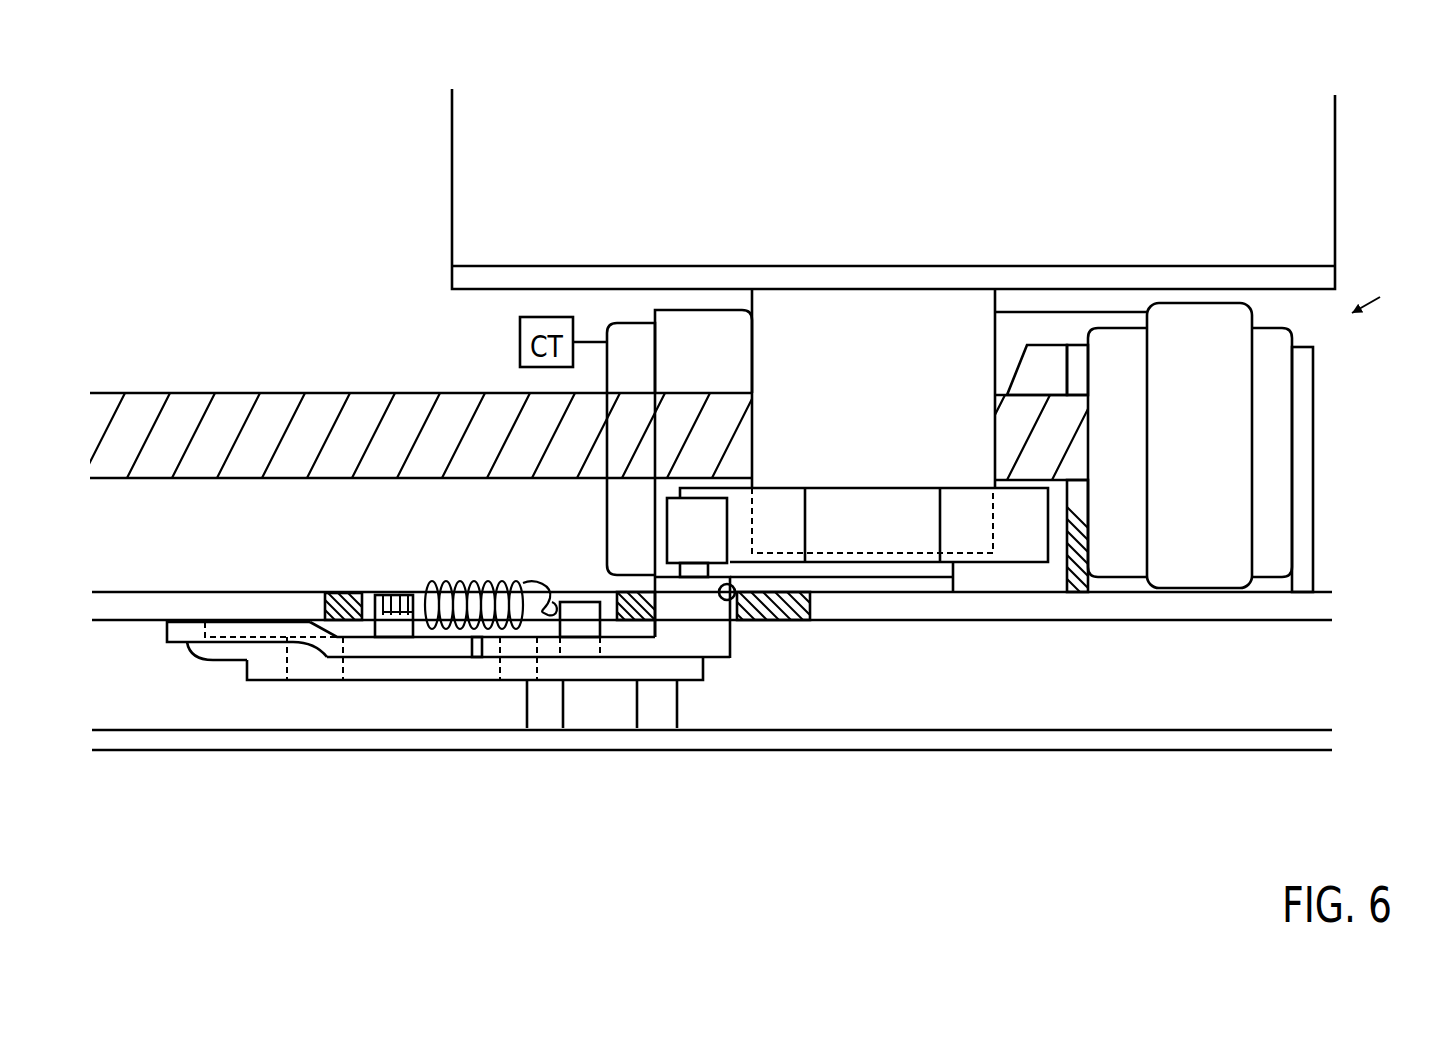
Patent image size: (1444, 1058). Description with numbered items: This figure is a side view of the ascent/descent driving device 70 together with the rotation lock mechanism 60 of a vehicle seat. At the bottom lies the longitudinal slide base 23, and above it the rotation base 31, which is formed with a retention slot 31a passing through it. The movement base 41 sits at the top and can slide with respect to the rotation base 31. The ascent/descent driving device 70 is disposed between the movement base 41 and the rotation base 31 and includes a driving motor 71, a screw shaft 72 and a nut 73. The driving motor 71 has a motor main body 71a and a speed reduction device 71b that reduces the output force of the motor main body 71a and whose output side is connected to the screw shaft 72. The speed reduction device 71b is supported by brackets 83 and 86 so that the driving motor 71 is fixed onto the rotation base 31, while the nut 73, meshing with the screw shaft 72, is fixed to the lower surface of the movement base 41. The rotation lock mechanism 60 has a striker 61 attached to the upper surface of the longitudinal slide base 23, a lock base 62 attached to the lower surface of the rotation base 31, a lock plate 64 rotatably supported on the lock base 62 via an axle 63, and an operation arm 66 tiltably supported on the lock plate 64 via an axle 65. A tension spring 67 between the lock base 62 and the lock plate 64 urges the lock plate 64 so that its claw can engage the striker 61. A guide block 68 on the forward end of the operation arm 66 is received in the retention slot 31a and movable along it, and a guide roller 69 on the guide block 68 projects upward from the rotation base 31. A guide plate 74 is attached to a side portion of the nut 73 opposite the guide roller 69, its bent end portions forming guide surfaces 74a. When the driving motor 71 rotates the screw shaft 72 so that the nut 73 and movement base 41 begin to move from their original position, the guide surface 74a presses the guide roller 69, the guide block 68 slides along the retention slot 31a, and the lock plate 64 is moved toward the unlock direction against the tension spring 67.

The longitudinal slide base 23 is at (1190, 728).
The rotation base 31 is at (130, 590).
The retention slot 31a is at (733, 577).
The movement base 41 is at (1298, 182).
The rotation lock mechanism 60 is at (376, 706).
The striker 61 is at (663, 703).
The lock base 62 is at (190, 647).
The axle 63 is at (307, 663).
The lock plate 64 is at (458, 668).
The axle 65 is at (508, 667).
The operation arm 66 is at (717, 647).
The tension spring 67 is at (457, 580).
The guide block 68 is at (687, 525).
The guide roller 69 is at (683, 602).
The ascent/descent driving device 70 is at (1388, 269).
The driving motor 71 is at (1008, 364).
The motor main body 71a is at (698, 352).
The speed reduction device 71b is at (1223, 382).
The screw shaft 72 is at (181, 392).
The nut 73 is at (852, 342).
The guide plate 74 is at (863, 522).
The guide surface 74a is at (777, 517).
The bracket 83 is at (1082, 368).
The bracket 86 is at (1305, 488).